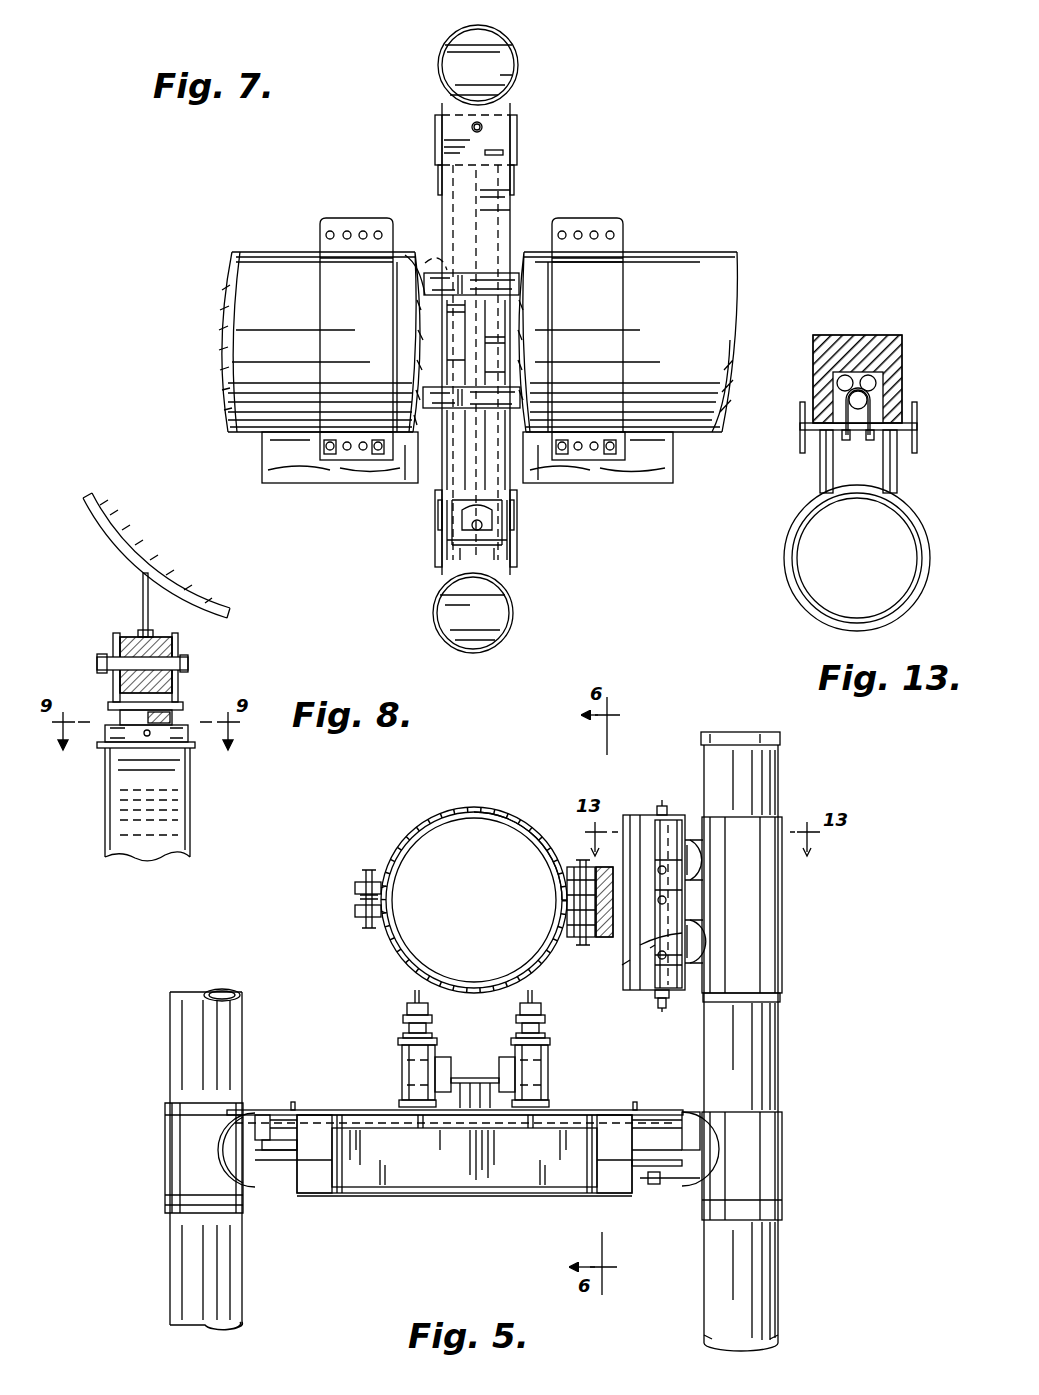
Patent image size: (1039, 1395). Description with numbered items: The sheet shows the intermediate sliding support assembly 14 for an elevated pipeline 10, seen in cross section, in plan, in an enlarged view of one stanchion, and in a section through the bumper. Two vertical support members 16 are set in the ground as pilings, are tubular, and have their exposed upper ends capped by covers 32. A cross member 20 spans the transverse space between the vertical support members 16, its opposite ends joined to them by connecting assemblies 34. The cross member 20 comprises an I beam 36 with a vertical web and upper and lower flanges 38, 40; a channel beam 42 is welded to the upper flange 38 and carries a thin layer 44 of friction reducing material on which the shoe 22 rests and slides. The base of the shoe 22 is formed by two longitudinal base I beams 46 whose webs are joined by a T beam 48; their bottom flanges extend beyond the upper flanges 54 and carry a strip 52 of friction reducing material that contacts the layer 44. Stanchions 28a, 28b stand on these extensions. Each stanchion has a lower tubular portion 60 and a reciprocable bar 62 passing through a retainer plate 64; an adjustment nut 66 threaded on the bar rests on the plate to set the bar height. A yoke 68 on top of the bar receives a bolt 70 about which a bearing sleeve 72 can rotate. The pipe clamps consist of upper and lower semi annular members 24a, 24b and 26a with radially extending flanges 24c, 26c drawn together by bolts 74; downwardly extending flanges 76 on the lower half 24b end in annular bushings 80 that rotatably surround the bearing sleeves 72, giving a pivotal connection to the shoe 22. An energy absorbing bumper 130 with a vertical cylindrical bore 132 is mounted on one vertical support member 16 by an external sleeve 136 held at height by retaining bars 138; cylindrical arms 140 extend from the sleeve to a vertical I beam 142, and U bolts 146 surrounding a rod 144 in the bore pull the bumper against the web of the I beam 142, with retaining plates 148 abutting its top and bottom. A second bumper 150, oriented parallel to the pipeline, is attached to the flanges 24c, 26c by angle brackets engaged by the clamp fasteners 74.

In FIG. 7, the pipeline 10 is at (715, 283).
In FIG. 8, the pipeline 10 is at (135, 535).
In FIG. 5, the pipeline 10 is at (472, 812).
In FIG. 7, the support assembly 14 is at (680, 160).
In FIG. 5, the support assembly 14 is at (820, 925).
In FIG. 13, the vertical support members 16 is at (805, 565).
In FIG. 5, the vertical support members 16 is at (190, 1022).
In FIG. 7, the cross member 20 is at (440, 475).
In FIG. 5, the cross member 20 is at (358, 1195).
In FIG. 7, the shoe 22 is at (482, 265).
In FIG. 5, the shoe 22 is at (390, 1055).
In FIG. 7, the upper semi annular member 24a is at (318, 282).
In FIG. 5, the upper semi annular member 24a is at (420, 825).
In FIG. 8, the lower semi annular member 24b is at (100, 528).
In FIG. 5, the lower semi annular member 24b is at (390, 947).
In FIG. 7, the clamp flanges 24c is at (327, 220).
In FIG. 5, the clamp flanges 24c is at (355, 910).
In FIG. 7, the upper semi annular member 26a is at (610, 280).
In FIG. 7, the clamp flanges 26c is at (615, 220).
In FIG. 8, the stanchion 28a is at (100, 808).
In FIG. 5, the stanchion 28a is at (548, 1048).
In FIG. 5, the stanchion 28b is at (400, 1045).
In FIG. 7, the covers 32 is at (497, 58).
In FIG. 5, the covers 32 is at (733, 735).
In FIG. 7, the connecting assemblies 34 is at (540, 120).
In FIG. 5, the connecting assemblies 34 is at (268, 1178).
In FIG. 7, the I beam 36 is at (522, 483).
In FIG. 5, the I beam 36 is at (422, 1170).
In FIG. 5, the upper flange 38 is at (488, 1115).
In FIG. 5, the lower flange 40 is at (478, 1188).
In FIG. 7, the channel beam 42 is at (505, 210).
In FIG. 5, the channel beam 42 is at (568, 1120).
In FIG. 7, the friction reducing layer 44 is at (500, 183).
In FIG. 7, the base I beams 46 is at (447, 270).
In FIG. 5, the base I beams 46 is at (405, 1078).
In FIG. 7, the T beam 48 is at (480, 330).
In FIG. 5, the T beam 48 is at (462, 1076).
In FIG. 5, the strip of friction reducing material 52 is at (413, 1118).
In FIG. 7, the upper flanges 54 is at (430, 275).
In FIG. 5, the upper flanges 54 is at (402, 1068).
In FIG. 8, the lower tubular portion 60 is at (190, 840).
In FIG. 8, the bar 62 is at (175, 720).
In FIG. 8, the retainer plate 64 is at (192, 745).
In FIG. 8, the adjustment nut 66 is at (130, 733).
In FIG. 8, the yoke 68 is at (180, 705).
In FIG. 8, the bolt 70 is at (185, 663).
In FIG. 8, the bearing sleeve 72 is at (135, 640).
In FIG. 7, the bolts 74 is at (363, 230).
In FIG. 5, the bolts 74 is at (370, 875).
In FIG. 8, the downwardly extending flanges 76 is at (141, 582).
In FIG. 5, the downwardly extending flanges 76 is at (412, 984).
In FIG. 8, the annular bushing 80 is at (150, 640).
In FIG. 13, the bumper 130 is at (843, 333).
In FIG. 5, the bumper 130 is at (628, 815).
In FIG. 13, the cylindrical bore 132 is at (885, 335).
In FIG. 13, the external sleeve 136 is at (790, 520).
In FIG. 5, the external sleeve 136 is at (765, 893).
In FIG. 5, the retaining bars 138 is at (760, 1000).
In FIG. 13, the arms 140 is at (830, 465).
In FIG. 5, the arms 140 is at (705, 855).
In FIG. 13, the I beam 142 is at (800, 440).
In FIG. 5, the I beam 142 is at (655, 930).
In FIG. 13, the rod 144 is at (878, 395).
In FIG. 5, the rod 144 is at (660, 815).
In FIG. 13, the U bolts 146 is at (880, 378).
In FIG. 5, the U bolts 146 is at (680, 810).
In FIG. 13, the retaining plates 148 is at (812, 368).
In FIG. 5, the retaining plates 148 is at (650, 810).
In FIG. 7, the second bumper 150 is at (628, 485).
In FIG. 5, the second bumper 150 is at (565, 940).